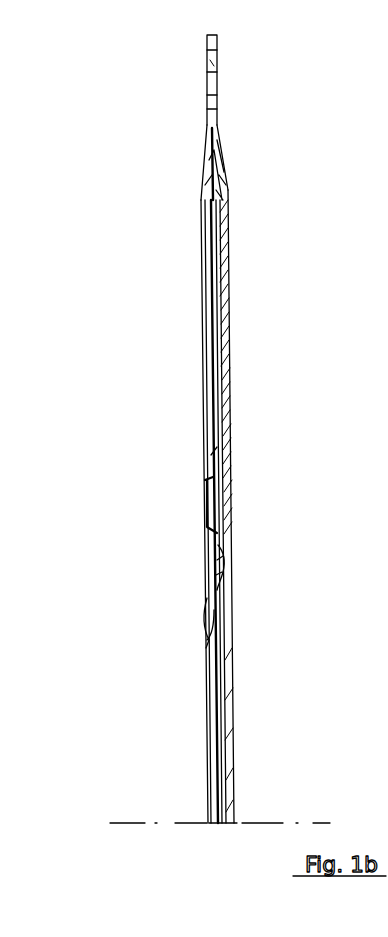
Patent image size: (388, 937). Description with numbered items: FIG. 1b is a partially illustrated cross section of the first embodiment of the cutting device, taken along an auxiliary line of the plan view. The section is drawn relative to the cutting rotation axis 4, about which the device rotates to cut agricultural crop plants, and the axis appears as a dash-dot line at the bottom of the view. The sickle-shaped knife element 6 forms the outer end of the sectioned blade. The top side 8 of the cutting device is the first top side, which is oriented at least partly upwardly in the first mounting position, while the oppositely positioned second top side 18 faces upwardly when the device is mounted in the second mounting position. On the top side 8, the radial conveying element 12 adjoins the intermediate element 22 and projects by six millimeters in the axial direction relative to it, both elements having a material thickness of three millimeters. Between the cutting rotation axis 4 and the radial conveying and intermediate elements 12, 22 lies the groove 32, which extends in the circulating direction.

The cutting rotation axis 4 is at (258, 823).
The knife element 6 is at (215, 70).
The top side 8 is at (231, 294).
The radial conveying element 12 is at (224, 383).
The second top side 18 is at (202, 295).
The intermediate element 22 is at (221, 452).
The groove 32 is at (220, 568).